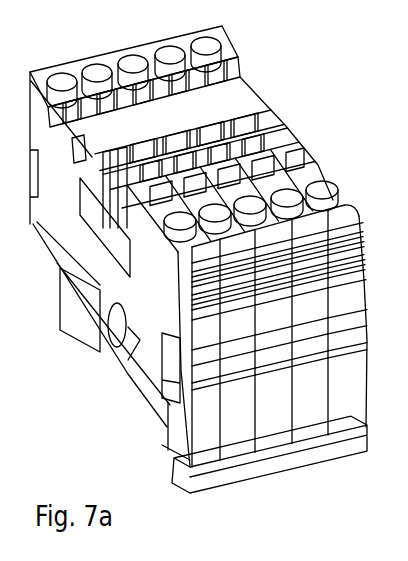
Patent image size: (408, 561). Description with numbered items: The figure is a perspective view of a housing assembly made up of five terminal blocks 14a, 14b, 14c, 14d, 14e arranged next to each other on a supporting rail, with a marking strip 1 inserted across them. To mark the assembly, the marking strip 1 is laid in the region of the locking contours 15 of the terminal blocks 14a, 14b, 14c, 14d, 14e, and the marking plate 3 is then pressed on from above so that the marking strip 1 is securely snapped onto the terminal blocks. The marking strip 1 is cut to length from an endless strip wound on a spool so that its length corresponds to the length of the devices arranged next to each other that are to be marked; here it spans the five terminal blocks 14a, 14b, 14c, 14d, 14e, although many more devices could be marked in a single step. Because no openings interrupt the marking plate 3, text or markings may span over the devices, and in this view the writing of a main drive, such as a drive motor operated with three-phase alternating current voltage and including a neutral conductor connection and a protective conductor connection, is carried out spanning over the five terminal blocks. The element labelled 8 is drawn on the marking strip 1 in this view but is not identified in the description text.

The marking strip 1 is at (259, 102).
The marking plate 3 is at (207, 105).
The housing of jumper element 8 is at (271, 84).
The locking contours 15 is at (78, 153).
The terminal block 14a is at (200, 450).
The terminal block 14b is at (237, 437).
The terminal block 14c is at (271, 434).
The terminal block 14d is at (307, 424).
The terminal block 14e is at (344, 414).